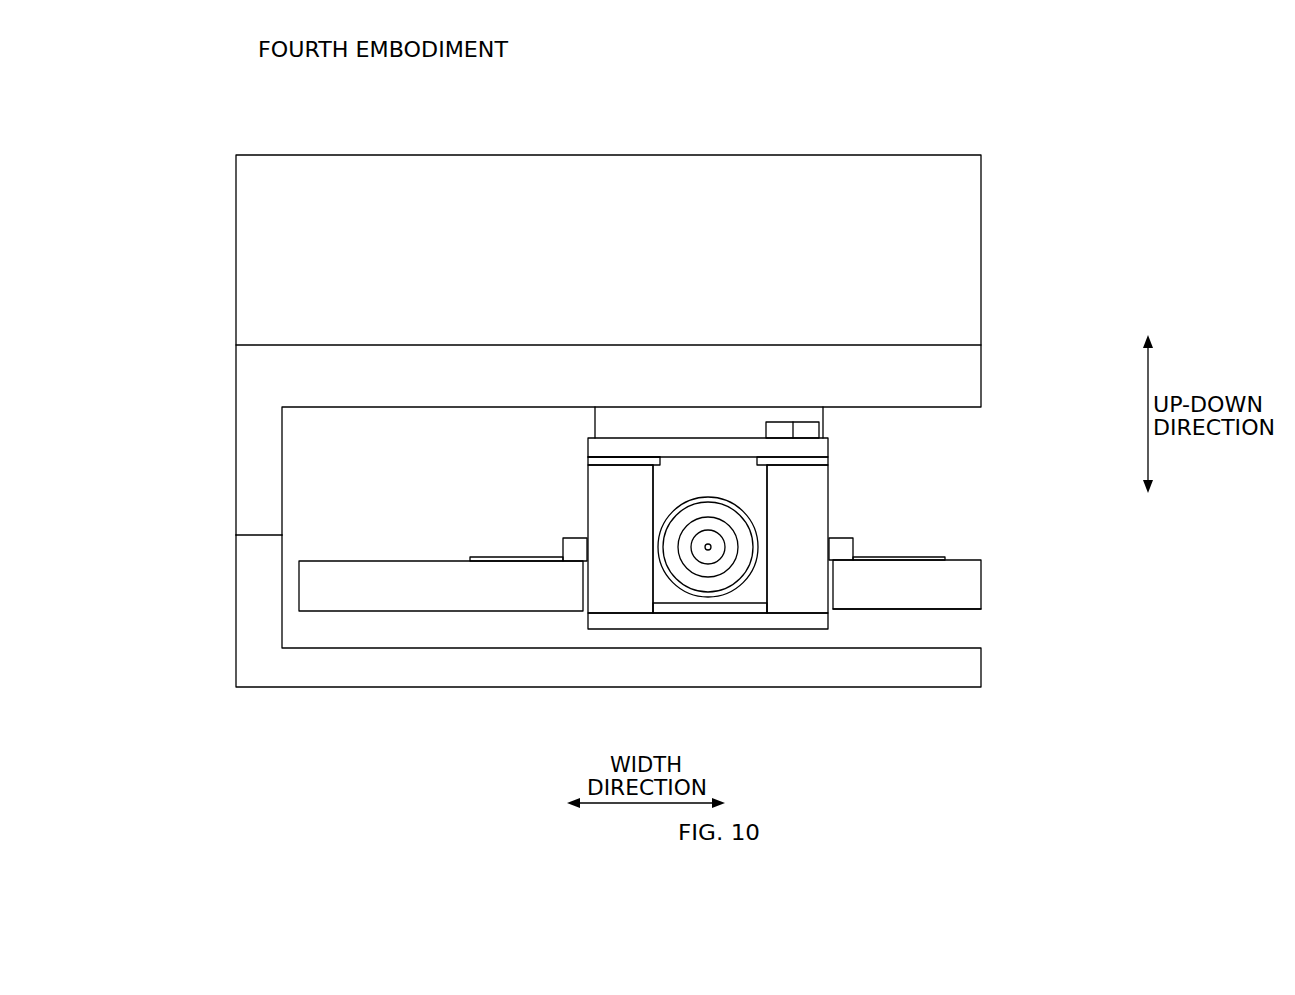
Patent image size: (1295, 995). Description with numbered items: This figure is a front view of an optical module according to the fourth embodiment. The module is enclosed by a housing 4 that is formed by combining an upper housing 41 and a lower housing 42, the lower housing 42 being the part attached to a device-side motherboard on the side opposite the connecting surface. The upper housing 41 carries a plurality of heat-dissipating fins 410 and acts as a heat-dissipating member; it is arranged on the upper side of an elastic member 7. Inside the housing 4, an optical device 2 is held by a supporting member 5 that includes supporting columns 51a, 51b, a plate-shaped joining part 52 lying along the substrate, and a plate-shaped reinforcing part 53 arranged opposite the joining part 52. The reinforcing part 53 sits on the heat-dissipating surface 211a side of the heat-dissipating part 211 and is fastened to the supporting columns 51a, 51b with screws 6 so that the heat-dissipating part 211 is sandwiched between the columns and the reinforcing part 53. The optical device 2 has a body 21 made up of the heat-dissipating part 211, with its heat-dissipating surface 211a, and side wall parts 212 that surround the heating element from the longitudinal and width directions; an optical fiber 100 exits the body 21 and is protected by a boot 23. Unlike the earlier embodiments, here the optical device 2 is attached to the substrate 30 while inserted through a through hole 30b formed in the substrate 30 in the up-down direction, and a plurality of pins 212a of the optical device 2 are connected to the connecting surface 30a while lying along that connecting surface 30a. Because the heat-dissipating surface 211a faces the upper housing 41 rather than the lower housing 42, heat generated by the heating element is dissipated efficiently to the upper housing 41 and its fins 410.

The optical device 2 is at (983, 470).
The housing 4 is at (140, 490).
The upper housing 41 is at (211, 464).
The lower housing 42 is at (210, 604).
The heat-dissipating fins 410 is at (687, 170).
The elastic member 7 is at (702, 413).
The screws 6 is at (807, 428).
The supporting member 5 is at (511, 473).
The reinforcing part 53 is at (588, 441).
The supporting column 51a is at (813, 523).
The supporting column 51b is at (600, 499).
The joining part 52 is at (710, 623).
The body 21 is at (907, 447).
The heat-dissipating part 211 is at (828, 462).
The heat-dissipating surface 211a is at (627, 455).
The side wall parts 212 is at (748, 482).
The pins 212a is at (487, 557).
The optical fiber 100 is at (708, 547).
The boot 23 is at (749, 605).
The substrate 30 is at (967, 587).
The connecting surface 30a is at (359, 561).
The through hole 30b is at (845, 623).